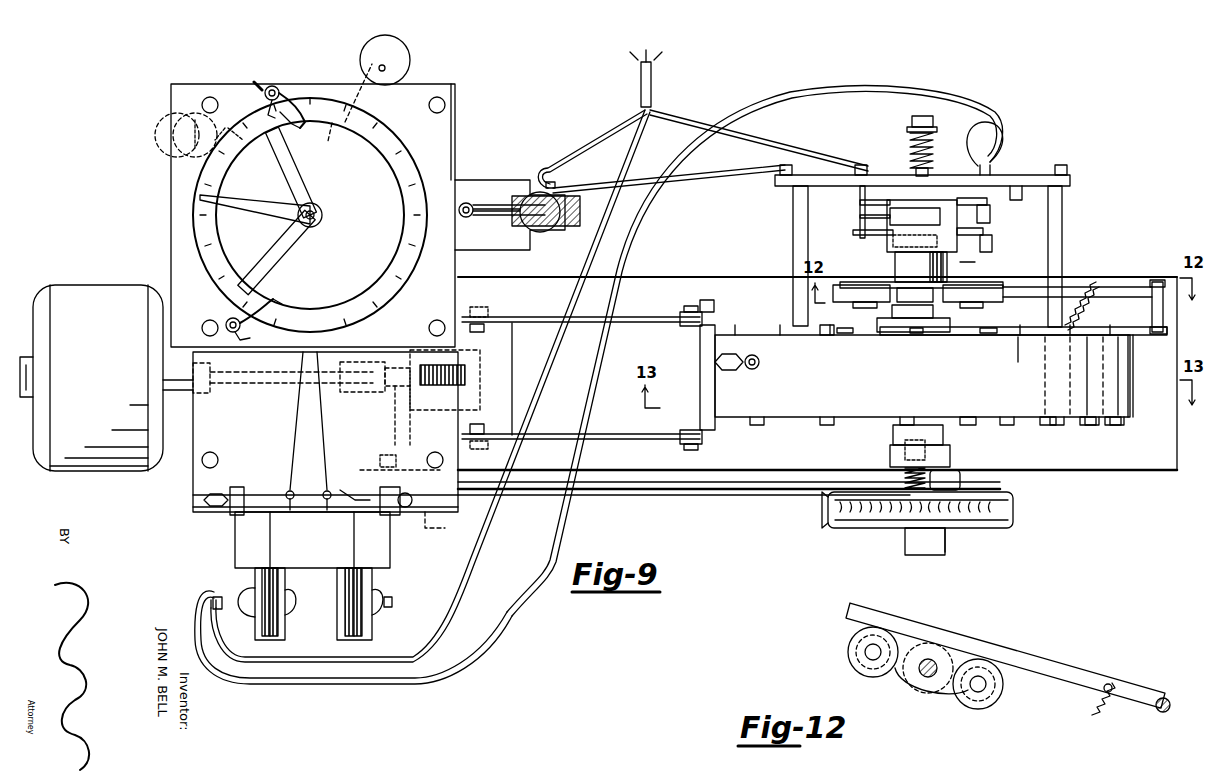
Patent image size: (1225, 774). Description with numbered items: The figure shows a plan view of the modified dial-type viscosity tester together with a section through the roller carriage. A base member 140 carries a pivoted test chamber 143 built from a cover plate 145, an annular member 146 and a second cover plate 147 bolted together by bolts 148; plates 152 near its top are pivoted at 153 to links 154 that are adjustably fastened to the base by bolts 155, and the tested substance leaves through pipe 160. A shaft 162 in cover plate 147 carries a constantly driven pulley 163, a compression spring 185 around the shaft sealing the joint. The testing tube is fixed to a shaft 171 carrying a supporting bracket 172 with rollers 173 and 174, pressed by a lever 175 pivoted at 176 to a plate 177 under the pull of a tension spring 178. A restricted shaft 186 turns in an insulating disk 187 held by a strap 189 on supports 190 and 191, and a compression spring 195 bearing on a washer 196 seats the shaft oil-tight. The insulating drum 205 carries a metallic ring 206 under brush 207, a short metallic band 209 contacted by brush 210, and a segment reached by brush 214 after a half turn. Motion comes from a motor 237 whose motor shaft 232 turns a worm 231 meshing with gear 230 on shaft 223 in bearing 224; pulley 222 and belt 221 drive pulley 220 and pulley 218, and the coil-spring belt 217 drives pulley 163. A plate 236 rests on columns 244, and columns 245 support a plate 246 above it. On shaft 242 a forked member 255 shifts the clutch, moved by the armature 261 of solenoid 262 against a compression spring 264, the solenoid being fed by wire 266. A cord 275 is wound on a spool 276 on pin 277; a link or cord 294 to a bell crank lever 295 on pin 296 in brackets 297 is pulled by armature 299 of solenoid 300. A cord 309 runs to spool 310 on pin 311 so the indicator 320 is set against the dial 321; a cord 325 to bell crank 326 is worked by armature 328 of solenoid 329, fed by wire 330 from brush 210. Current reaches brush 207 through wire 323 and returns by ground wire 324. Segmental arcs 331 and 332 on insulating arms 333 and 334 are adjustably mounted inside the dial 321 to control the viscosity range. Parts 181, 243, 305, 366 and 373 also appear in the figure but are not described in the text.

In FIG. 9, the base member 140 is at (1170, 470).
In FIG. 9, the test chamber 143 is at (1040, 428).
In FIG. 9, the cover plate 145 is at (1000, 327).
In FIG. 9, the annular member 146 is at (915, 377).
In FIG. 9, the cover plate 147 is at (1085, 428).
In FIG. 9, the bolts 148 is at (840, 330).
In FIG. 9, the plates 152 is at (712, 320).
In FIG. 9, the pivot 153 is at (702, 305).
In FIG. 9, the links 154 is at (655, 316).
In FIG. 9, the bolts 155 is at (488, 310).
In FIG. 9, the pipe 160 is at (968, 426).
In FIG. 9, the shaft 162 is at (910, 556).
In FIG. 9, the pulley 163 is at (970, 530).
In FIG. 9, the shaft 171 is at (950, 310).
In FIG. 12, the shaft 171 is at (922, 680).
In FIG. 9, the supporting bracket 172 is at (897, 290).
In FIG. 12, the supporting bracket 172 is at (905, 690).
In FIG. 9, the roller 173 is at (855, 285).
In FIG. 12, the roller 173 is at (848, 652).
In FIG. 9, the roller 174 is at (1003, 288).
In FIG. 12, the roller 174 is at (1000, 695).
In FIG. 9, the lever 175 is at (1100, 287).
In FIG. 12, the lever 175 is at (1024, 660).
In FIG. 9, the pivot 176 is at (1158, 280).
In FIG. 12, the pivot 176 is at (1167, 698).
In FIG. 9, the plate 177 is at (1155, 335).
In FIG. 9, the tension spring 178 is at (1100, 303).
In FIG. 12, the tension spring 178 is at (1092, 715).
In FIG. 9, the bolt 181 is at (720, 370).
In FIG. 9, the compression spring 185 is at (920, 446).
In FIG. 9, the restricted shaft 186 is at (912, 114).
In FIG. 9, the disk 187 is at (1010, 190).
In FIG. 9, the strap 189 is at (1070, 175).
In FIG. 9, the support 190 is at (793, 241).
In FIG. 9, the support 191 is at (1062, 210).
In FIG. 9, the compression spring 195 is at (936, 148).
In FIG. 9, the washer 196 is at (907, 129).
In FIG. 9, the drum 205 is at (858, 217).
In FIG. 9, the metallic ring 206 is at (970, 207).
In FIG. 9, the brush 207 is at (858, 202).
In FIG. 9, the short metallic band 209 is at (925, 230).
In FIG. 9, the brush 210 is at (971, 234).
In FIG. 9, the brush 214 is at (976, 261).
In FIG. 9, the belt 217 is at (1013, 510).
In FIG. 9, the pulley 218 is at (822, 530).
In FIG. 9, the pulley 220 is at (962, 478).
In FIG. 9, the belt 221 is at (750, 497).
In FIG. 9, the pulley 222 is at (450, 527).
In FIG. 9, the shaft 223 is at (392, 446).
In FIG. 9, the bearing 224 is at (370, 468).
In FIG. 9, the gear 230 is at (480, 350).
In FIG. 9, the worm 231 is at (385, 395).
In FIG. 9, the motor shaft 232 is at (283, 373).
In FIG. 9, the plate 236 is at (456, 138).
In FIG. 9, the motor 237 is at (106, 378).
In FIG. 9, the shaft 242 is at (932, 258).
In FIG. 9, the contact 243 is at (853, 232).
In FIG. 9, the columns 244 is at (212, 452).
In FIG. 9, the columns 245 is at (212, 97).
In FIG. 9, the plate 246 is at (171, 212).
In FIG. 9, the member 255 is at (504, 223).
In FIG. 9, the armature 261 is at (558, 228).
In FIG. 9, the solenoid 262 is at (540, 233).
In FIG. 9, the compression spring 264 is at (476, 200).
In FIG. 9, the wire 266 is at (742, 170).
In FIG. 9, the cord 275 is at (232, 122).
In FIG. 9, the spool 276 is at (156, 135).
In FIG. 9, the pin 277 is at (199, 124).
In FIG. 9, the link or cord 294 is at (302, 420).
In FIG. 9, the bell crank lever 295 is at (285, 488).
In FIG. 9, the pin 296 is at (236, 487).
In FIG. 9, the brackets 297 is at (193, 500).
In FIG. 9, the armature 299 is at (285, 585).
In FIG. 9, the solenoid 300 is at (290, 605).
In FIG. 9, the wire 305 is at (338, 660).
In FIG. 9, the cord 309 is at (330, 90).
In FIG. 9, the spool member 310 is at (385, 36).
In FIG. 9, the pin 311 is at (395, 60).
In FIG. 9, the indicator 320 is at (262, 210).
In FIG. 9, the dial 321 is at (412, 160).
In FIG. 9, the wire 323 is at (660, 60).
In FIG. 9, the ground wire 324 is at (640, 60).
In FIG. 9, the cord 325 is at (325, 440).
In FIG. 9, the bell crank 326 is at (351, 485).
In FIG. 9, the armature 328 is at (337, 625).
In FIG. 9, the solenoid 329 is at (308, 602).
In FIG. 9, the wire 330 is at (928, 168).
In FIG. 9, the segmental arc 331 is at (305, 140).
In FIG. 9, the segmental arc 332 is at (284, 300).
In FIG. 9, the arm 333 is at (343, 162).
In FIG. 9, the arm 334 is at (275, 160).
In FIG. 9, the pivot 366 is at (250, 337).
In FIG. 9, the pivot 373 is at (282, 87).